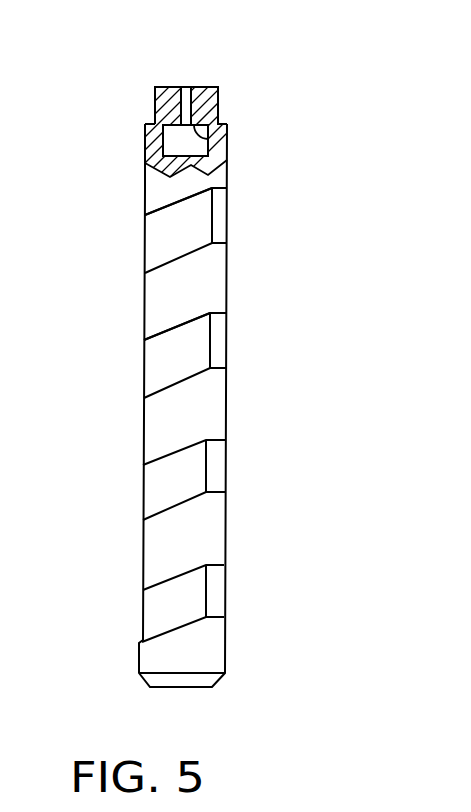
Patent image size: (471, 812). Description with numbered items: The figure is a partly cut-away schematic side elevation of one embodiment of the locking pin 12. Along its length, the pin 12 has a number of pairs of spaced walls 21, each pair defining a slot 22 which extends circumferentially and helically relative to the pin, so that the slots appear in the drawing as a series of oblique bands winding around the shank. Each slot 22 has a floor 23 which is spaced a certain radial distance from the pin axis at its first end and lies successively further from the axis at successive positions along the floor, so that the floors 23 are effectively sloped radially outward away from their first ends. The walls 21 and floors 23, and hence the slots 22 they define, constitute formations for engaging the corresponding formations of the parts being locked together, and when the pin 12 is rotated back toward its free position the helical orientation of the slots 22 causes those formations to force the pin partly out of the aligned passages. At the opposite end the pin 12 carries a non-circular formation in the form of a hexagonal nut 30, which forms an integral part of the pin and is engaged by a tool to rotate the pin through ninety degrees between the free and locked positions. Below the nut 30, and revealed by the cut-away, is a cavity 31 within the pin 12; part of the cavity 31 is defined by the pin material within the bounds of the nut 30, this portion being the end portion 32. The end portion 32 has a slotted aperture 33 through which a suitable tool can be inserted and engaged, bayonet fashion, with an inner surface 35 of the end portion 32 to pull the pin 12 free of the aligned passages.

The pin 12 is at (269, 95).
The spaced walls 21 is at (221, 213).
The slot 22 is at (231, 212).
The floor 23 is at (167, 227).
The hexagonal nut 30 is at (152, 106).
The cavity 31 is at (177, 142).
The end portion 32 is at (153, 112).
The slotted aperture 33 is at (186, 86).
The inner surface 35 is at (212, 143).